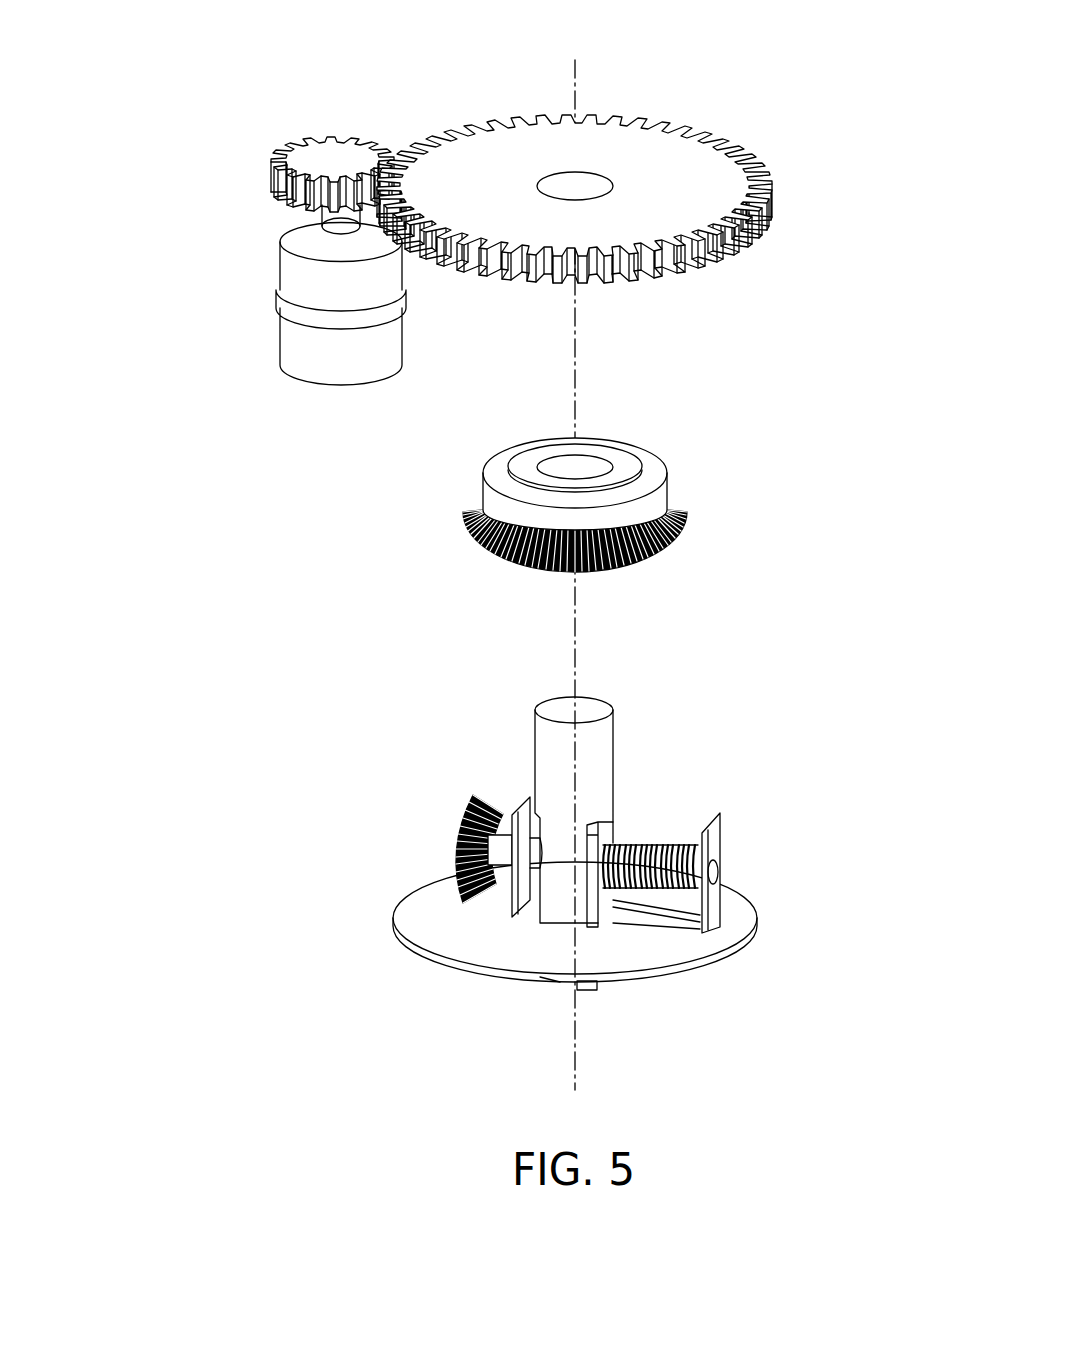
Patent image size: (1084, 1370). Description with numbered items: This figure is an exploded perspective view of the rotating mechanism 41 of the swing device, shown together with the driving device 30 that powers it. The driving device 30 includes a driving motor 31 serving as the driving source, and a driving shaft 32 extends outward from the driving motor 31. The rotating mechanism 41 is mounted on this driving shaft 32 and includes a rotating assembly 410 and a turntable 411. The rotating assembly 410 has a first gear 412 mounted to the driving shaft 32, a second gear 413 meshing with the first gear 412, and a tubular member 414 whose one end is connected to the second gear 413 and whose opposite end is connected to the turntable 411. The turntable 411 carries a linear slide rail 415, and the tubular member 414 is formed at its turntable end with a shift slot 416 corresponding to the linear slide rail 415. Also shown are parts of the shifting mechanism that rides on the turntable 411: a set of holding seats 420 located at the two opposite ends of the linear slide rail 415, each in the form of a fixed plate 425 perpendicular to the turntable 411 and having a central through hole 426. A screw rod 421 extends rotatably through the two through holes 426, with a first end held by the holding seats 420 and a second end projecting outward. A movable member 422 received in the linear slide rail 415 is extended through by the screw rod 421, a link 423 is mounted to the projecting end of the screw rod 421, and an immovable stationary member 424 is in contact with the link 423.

The driving device 30 is at (262, 259).
The driving motor 31 is at (327, 362).
The driving shaft 32 is at (332, 224).
The rotating mechanism 41 is at (601, 141).
The rotating assembly 410 is at (574, 141).
The first gear 412 is at (345, 160).
The second gear 413 is at (672, 160).
The tubular member 414 is at (570, 757).
The linear slide rail 415 is at (687, 927).
The shift slot 416 is at (618, 826).
The holding seats 420 is at (533, 905).
The screw rod 421 is at (672, 882).
The movable member 422 is at (610, 913).
The link 423 is at (470, 900).
The stationary member 424 is at (653, 507).
The fixed plate 425 is at (771, 860).
The through hole 426 is at (718, 875).
The turntable 411 is at (425, 915).